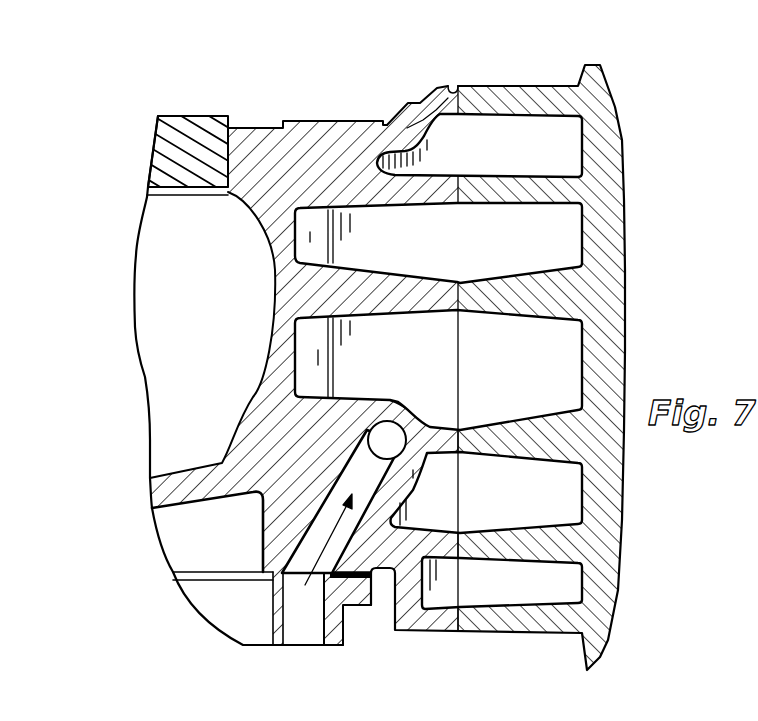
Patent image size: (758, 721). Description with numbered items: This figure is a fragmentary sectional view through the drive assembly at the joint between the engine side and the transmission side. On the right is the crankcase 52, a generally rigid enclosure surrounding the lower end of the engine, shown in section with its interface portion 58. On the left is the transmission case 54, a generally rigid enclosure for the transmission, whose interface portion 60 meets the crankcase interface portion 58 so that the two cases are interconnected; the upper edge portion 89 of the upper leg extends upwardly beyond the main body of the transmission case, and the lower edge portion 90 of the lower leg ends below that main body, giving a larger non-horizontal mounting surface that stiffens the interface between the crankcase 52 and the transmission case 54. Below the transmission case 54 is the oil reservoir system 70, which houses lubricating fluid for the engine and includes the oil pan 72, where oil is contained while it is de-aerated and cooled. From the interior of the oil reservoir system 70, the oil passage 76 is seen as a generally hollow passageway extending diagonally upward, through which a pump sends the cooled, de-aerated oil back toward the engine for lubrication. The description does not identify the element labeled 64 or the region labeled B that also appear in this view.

The crankcase 52 is at (597, 97).
The transmission case 54 is at (257, 127).
The interface portion 58 is at (553, 86).
The interface portion 60 is at (338, 137).
The interface line 64 is at (472, 56).
The oil reservoir system 70 is at (120, 535).
The oil pan 72 is at (344, 621).
The oil passage 76 is at (362, 472).
The upper edge portion 89 is at (418, 100).
The lower edge portion 90 is at (447, 622).
The gap B is at (318, 544).